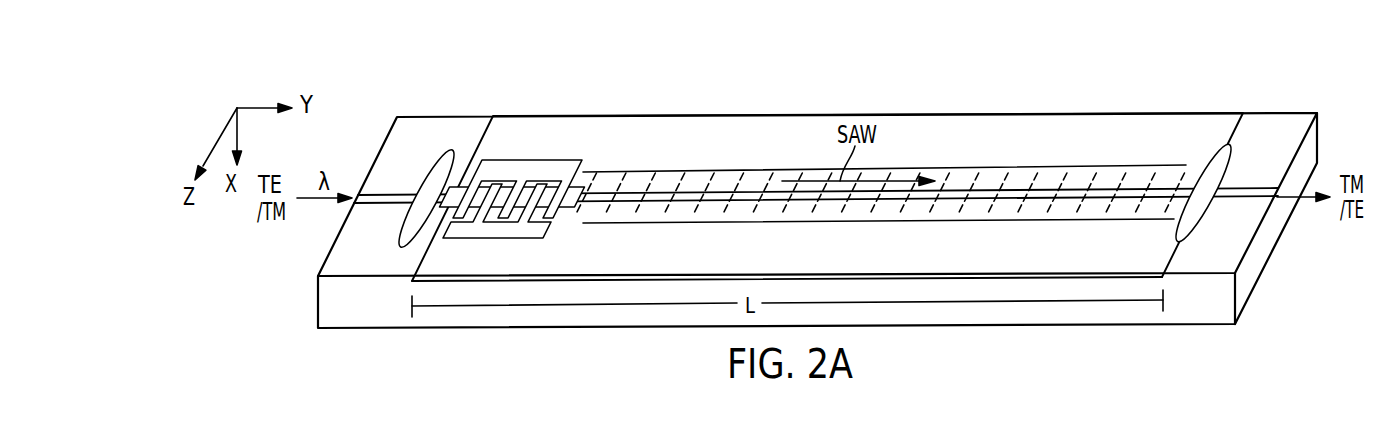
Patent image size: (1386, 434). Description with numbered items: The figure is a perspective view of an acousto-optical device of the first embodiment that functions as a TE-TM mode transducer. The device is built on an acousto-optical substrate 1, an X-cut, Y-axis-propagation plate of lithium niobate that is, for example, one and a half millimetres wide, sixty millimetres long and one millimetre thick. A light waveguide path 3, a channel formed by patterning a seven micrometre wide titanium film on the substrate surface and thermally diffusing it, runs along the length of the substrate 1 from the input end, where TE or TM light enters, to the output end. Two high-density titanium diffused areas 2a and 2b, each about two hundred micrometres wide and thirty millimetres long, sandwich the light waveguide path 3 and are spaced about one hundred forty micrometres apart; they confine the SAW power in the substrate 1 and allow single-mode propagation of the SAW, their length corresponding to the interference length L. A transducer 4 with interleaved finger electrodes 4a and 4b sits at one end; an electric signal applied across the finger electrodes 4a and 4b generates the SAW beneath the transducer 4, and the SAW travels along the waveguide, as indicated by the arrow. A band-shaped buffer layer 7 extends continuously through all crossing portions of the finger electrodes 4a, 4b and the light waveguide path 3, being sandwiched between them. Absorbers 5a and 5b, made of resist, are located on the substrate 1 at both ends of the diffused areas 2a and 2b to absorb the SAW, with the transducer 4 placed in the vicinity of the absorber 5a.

The acousto-optical substrate 1 is at (317, 298).
The high-density Ti diffused area 2a is at (988, 124).
The high-density Ti diffused area 2b is at (1013, 270).
The light waveguide path 3 is at (1250, 196).
The transducer 4 is at (515, 169).
The finger electrode 4a is at (567, 166).
The finger electrode 4b is at (535, 233).
The absorber 5a is at (450, 152).
The absorber 5b is at (1218, 162).
The buffer layer 7 is at (505, 195).